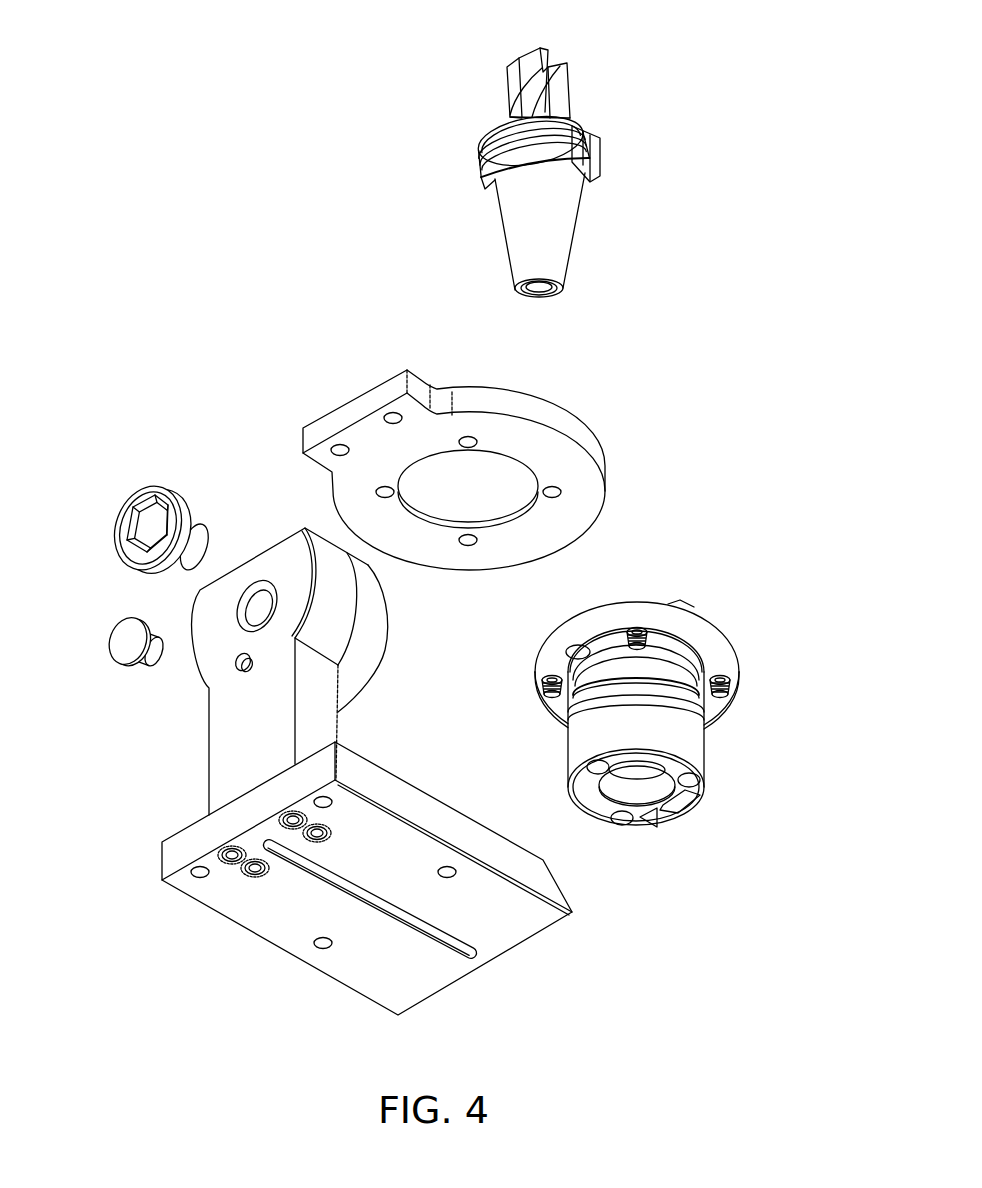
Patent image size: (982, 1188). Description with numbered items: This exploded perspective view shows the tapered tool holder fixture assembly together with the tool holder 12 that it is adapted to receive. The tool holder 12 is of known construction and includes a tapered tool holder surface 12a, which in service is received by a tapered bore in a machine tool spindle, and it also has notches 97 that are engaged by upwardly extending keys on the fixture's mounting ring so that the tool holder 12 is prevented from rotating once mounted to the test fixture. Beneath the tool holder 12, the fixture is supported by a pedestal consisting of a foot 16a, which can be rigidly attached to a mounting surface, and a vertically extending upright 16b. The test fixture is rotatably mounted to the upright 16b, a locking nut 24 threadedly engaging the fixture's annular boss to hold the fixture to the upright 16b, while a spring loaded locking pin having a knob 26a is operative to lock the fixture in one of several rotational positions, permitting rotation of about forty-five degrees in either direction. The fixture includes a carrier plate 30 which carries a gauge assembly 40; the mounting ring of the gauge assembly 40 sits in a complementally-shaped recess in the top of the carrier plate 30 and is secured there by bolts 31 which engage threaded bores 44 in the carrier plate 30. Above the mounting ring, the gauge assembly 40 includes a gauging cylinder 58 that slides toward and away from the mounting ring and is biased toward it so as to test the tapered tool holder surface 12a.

The tool holder 12 is at (582, 172).
The tapered tool holder surface 12a is at (560, 233).
The notches 97 is at (581, 134).
The carrier plate 30 is at (483, 465).
The threaded bores 44 is at (459, 443).
The locking nut 24 is at (130, 531).
The knob 26a is at (123, 652).
The upright 16b is at (222, 753).
The foot 16a is at (547, 882).
The gauge assembly 40 is at (683, 691).
The bolts 31 is at (637, 628).
The gauging cylinder 58 is at (652, 728).